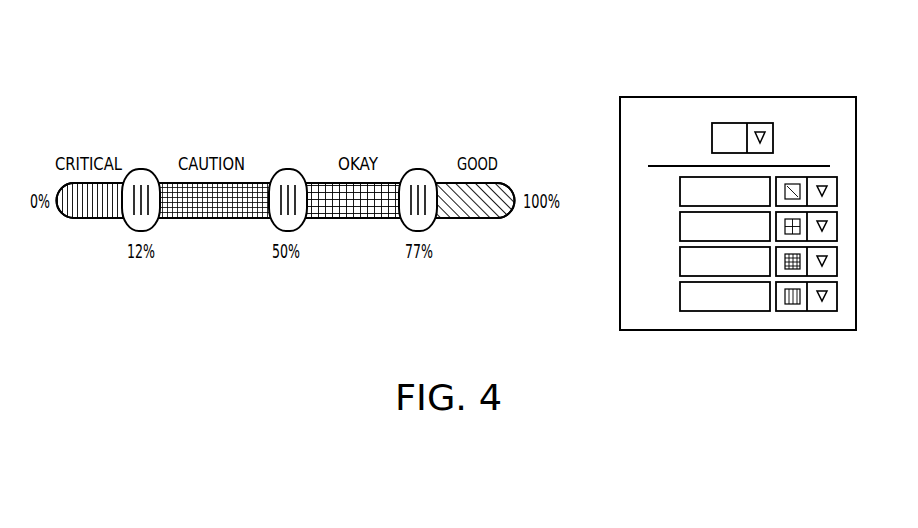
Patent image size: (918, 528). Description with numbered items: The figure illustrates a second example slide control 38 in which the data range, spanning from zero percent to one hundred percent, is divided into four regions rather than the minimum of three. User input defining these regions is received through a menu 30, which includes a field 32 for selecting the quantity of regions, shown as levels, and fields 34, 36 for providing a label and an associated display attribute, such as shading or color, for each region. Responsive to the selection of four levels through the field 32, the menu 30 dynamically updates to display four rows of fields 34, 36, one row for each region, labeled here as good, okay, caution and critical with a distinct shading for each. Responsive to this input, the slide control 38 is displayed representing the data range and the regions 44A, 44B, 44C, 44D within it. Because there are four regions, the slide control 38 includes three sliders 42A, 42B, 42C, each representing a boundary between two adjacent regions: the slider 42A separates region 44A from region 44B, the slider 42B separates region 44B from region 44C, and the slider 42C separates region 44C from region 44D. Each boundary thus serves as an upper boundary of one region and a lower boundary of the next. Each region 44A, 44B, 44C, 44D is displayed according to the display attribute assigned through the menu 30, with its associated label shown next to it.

The menu 30 is at (706, 234).
The field 32 is at (773, 138).
The field 34 is at (725, 312).
The field 36 is at (797, 312).
The slide control 38 is at (197, 70).
The slider 42A is at (143, 169).
The slider 42B is at (283, 169).
The slider 42C is at (417, 169).
The region 44A is at (90, 207).
The region 44B is at (212, 207).
The region 44C is at (348, 207).
The region 44D is at (480, 207).